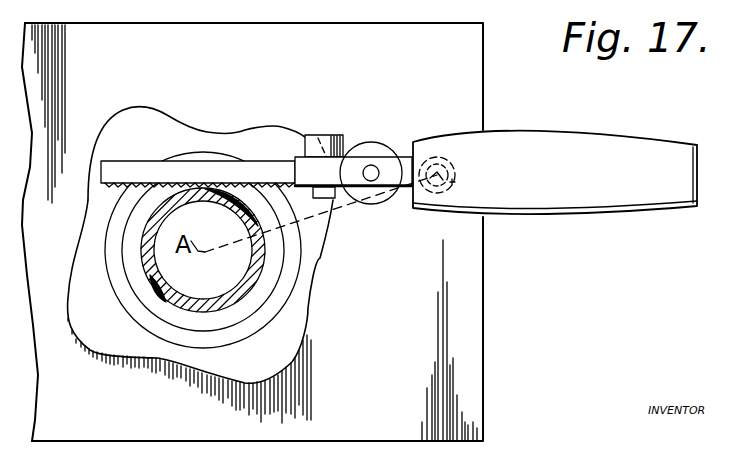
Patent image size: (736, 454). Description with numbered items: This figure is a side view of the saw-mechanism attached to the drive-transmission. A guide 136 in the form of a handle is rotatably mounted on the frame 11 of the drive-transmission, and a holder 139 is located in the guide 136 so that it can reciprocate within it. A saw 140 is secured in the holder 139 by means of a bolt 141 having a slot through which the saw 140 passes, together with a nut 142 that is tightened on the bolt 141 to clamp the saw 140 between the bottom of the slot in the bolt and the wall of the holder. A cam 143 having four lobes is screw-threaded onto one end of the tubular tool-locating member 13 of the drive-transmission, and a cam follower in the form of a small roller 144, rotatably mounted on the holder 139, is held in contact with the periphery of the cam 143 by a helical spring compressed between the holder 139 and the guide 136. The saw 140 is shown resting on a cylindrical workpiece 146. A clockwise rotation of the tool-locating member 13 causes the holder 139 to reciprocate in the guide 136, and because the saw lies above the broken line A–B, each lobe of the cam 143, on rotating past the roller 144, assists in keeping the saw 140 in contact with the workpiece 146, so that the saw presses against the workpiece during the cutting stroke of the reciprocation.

The frame 11 is at (420, 73).
The tubular tool-locating member 13 is at (275, 302).
The guide 136 is at (548, 143).
The holder 139 is at (392, 187).
The saw 140 is at (117, 170).
The bolt 141 is at (332, 199).
The nut 142 is at (315, 140).
The cam 143 is at (177, 130).
The roller 144 is at (388, 134).
The cylindrical workpiece 146 is at (160, 295).